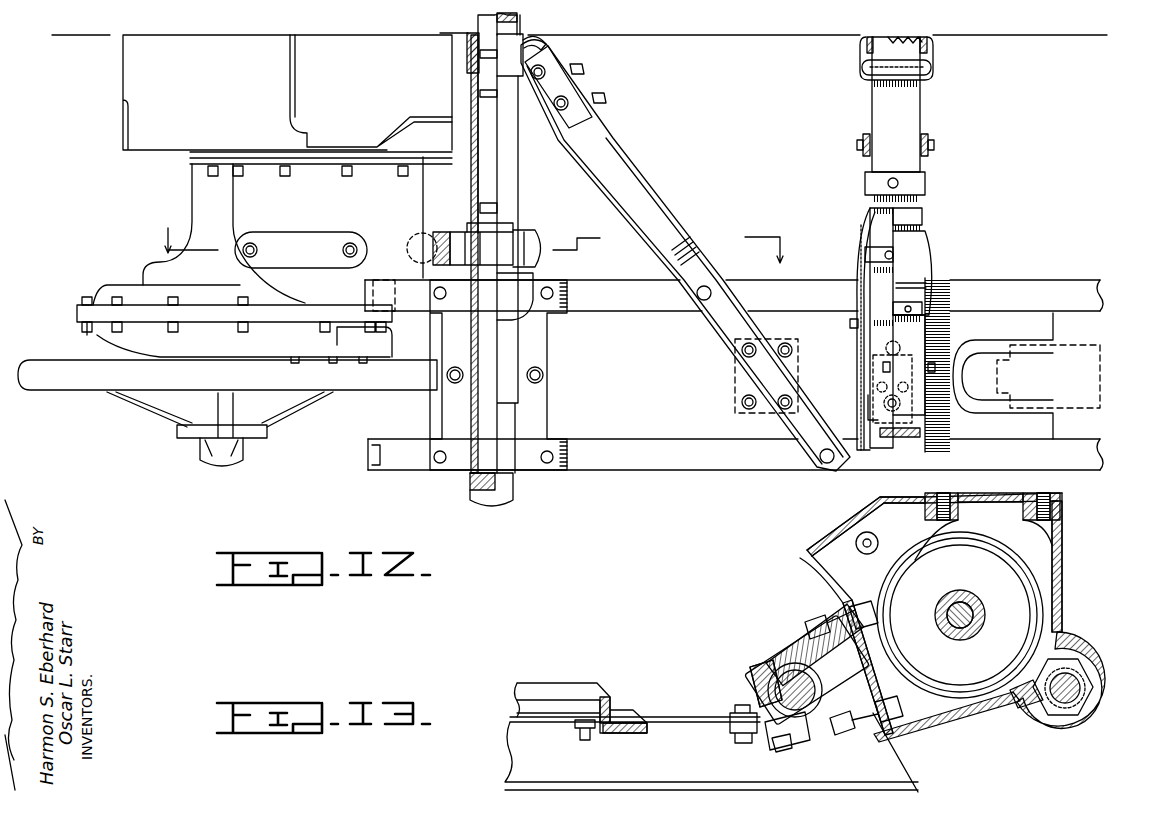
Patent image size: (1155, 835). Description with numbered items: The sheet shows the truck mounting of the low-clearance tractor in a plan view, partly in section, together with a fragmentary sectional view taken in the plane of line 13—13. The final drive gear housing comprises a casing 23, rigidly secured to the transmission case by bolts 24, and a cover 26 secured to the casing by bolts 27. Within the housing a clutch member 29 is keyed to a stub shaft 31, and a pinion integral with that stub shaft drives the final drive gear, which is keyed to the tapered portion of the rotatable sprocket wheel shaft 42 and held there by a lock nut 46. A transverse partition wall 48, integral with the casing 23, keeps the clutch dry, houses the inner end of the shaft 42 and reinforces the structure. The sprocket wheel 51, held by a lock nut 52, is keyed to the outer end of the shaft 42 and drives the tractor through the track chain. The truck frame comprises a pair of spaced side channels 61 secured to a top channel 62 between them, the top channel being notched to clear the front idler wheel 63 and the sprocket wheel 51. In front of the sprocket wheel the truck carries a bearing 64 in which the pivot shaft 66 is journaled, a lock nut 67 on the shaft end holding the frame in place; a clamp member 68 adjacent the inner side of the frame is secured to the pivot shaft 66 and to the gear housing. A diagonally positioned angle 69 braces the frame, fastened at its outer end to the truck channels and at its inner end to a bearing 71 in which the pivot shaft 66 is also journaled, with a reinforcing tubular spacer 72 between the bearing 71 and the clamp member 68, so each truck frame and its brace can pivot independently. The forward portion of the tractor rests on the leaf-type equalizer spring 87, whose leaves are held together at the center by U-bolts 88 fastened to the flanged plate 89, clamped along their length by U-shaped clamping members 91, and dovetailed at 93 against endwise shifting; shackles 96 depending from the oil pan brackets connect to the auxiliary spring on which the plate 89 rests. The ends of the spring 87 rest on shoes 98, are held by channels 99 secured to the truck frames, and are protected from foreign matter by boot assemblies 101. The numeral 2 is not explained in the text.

In FIG. 12, the container box 2 is at (213, 121).
In FIG. 12, the line 13— 13 is at (475, 253).
In FIG. 12, the casing 23 is at (387, 216).
In FIG. 13, the casing 23 is at (835, 545).
In FIG. 12, the bolts 24 is at (287, 178).
In FIG. 12, the cover 26 is at (107, 343).
In FIG. 12, the bolts 27 is at (180, 332).
In FIG. 13, the clutch member 29 is at (908, 568).
In FIG. 13, the stub shaft 31 is at (975, 612).
In FIG. 13, the sprocket wheel shaft 42 is at (1077, 690).
In FIG. 13, the lock nut 46 is at (1068, 665).
In FIG. 13, the transverse partition wall 48 is at (1025, 712).
In FIG. 12, the sprocket wheel 51 is at (95, 392).
In FIG. 12, the lock nut 52 is at (222, 470).
In FIG. 12, the side channels 61 is at (735, 285).
In FIG. 13, the side channels 61 is at (708, 769).
In FIG. 12, the top channel 62 is at (677, 406).
In FIG. 12, the front idler wheel 63 is at (1078, 374).
In FIG. 12, the bearing 64 is at (468, 470).
In FIG. 13, the bearing 64 is at (787, 660).
In FIG. 12, the pivot shaft 66 is at (478, 22).
In FIG. 13, the pivot shaft 66 is at (785, 688).
In FIG. 12, the lock nut 67 is at (497, 507).
In FIG. 12, the clamp member 68 is at (513, 232).
In FIG. 13, the clamp member 68 is at (800, 655).
In FIG. 12, the angle 69 is at (668, 210).
In FIG. 13, the angle 69 is at (552, 683).
In FIG. 12, the bearing 71 is at (526, 42).
In FIG. 12, the tubular spacer 72 is at (512, 158).
In FIG. 12, the equalizer spring 87 is at (900, 128).
In FIG. 12, the U-bolts 88 is at (908, 70).
In FIG. 12, the flanged plate 89 is at (860, 55).
In FIG. 12, the U-shaped clamping members 91 is at (920, 182).
In FIG. 12, the dovetails 93 is at (925, 48).
In FIG. 12, the shackles 96 is at (930, 138).
In FIG. 12, the shoes 98 is at (873, 398).
In FIG. 12, the channels 99 is at (865, 425).
In FIG. 12, the boot assemblies 101 is at (920, 248).